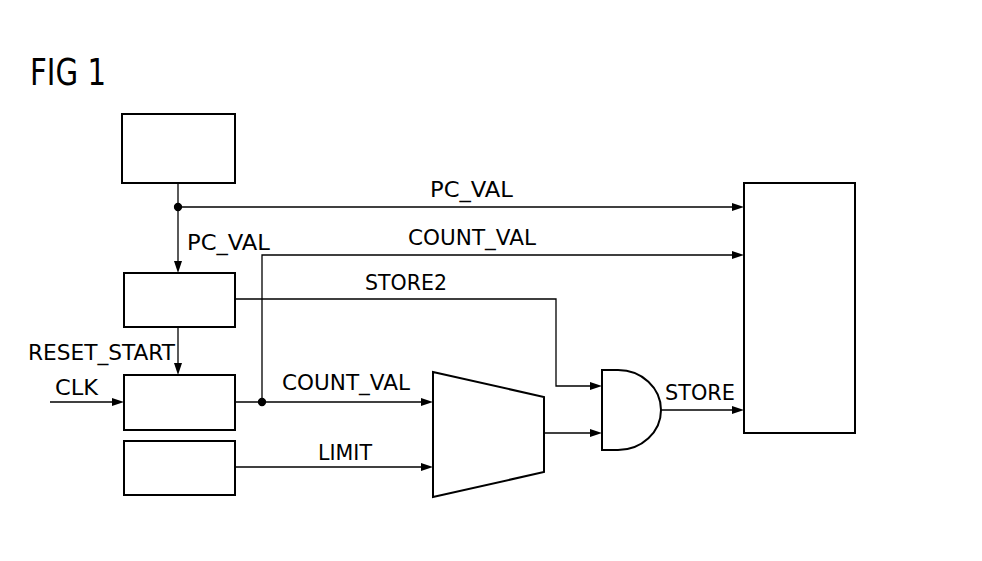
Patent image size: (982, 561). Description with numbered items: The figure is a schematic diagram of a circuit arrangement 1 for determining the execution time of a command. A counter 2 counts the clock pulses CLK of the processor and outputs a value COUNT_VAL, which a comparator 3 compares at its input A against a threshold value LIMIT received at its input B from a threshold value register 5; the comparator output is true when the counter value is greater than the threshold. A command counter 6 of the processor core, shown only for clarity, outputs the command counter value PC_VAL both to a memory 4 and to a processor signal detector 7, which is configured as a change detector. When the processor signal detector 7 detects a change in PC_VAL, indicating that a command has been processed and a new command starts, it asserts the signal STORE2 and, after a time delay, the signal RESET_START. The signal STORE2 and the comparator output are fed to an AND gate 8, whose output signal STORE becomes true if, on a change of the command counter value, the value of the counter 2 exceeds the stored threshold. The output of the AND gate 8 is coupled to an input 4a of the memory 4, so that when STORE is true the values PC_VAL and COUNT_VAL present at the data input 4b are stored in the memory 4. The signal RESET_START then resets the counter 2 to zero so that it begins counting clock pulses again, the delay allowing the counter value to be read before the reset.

The circuit arrangement 1 is at (762, 138).
The counter 2 is at (124, 418).
The comparator 3 is at (493, 484).
The memory 4 is at (799, 341).
The input of the memory 4a is at (765, 410).
The data input of the memory 4b is at (766, 230).
The threshold value register 5 is at (180, 495).
The command counter 6 is at (122, 148).
The processor signal detector 7 is at (124, 300).
The AND gate 8 is at (642, 443).